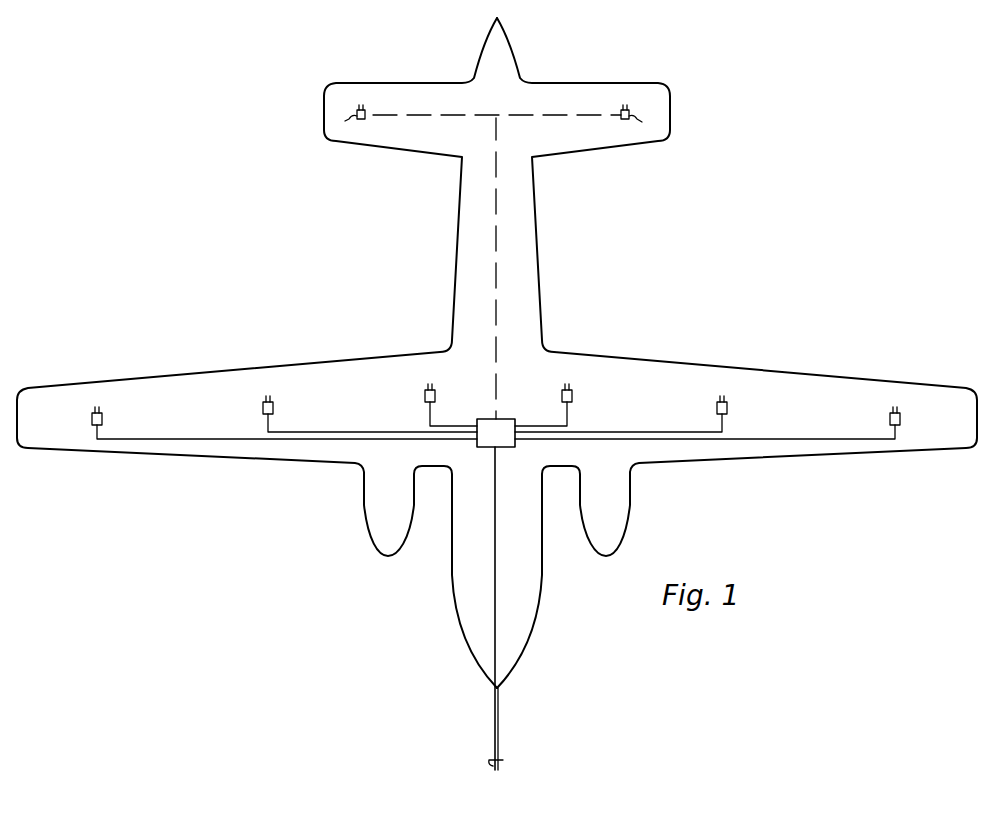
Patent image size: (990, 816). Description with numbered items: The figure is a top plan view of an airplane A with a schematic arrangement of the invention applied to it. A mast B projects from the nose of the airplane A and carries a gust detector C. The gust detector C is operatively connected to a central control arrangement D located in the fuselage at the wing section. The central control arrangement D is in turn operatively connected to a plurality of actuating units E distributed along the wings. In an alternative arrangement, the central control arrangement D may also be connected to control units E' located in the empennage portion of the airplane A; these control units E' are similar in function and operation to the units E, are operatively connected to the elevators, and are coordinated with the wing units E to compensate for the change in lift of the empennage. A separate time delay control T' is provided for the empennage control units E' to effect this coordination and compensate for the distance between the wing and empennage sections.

The airplane A is at (553, 243).
The mast B is at (500, 706).
The gust detector C is at (503, 761).
The central control arrangement D is at (498, 419).
The actuating units E is at (507, 405).
The control units E' is at (493, 101).
The time delay control T' is at (497, 122).